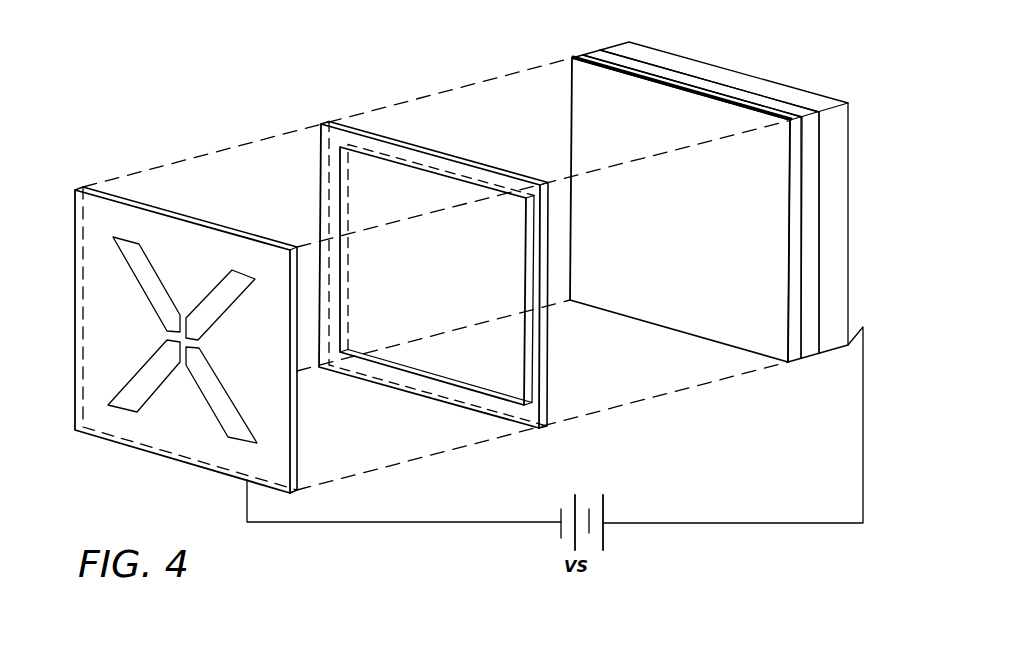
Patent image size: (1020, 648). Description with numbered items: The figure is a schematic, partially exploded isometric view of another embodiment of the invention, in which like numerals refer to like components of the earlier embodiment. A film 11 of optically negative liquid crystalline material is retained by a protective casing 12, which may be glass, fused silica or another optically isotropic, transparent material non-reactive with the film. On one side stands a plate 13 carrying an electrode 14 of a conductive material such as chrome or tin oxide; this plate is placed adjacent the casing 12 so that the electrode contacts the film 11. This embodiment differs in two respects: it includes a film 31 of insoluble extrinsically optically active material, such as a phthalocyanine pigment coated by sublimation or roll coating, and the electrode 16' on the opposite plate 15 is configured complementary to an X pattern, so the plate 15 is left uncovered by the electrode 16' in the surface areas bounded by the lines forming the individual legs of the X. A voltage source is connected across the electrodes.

The plate 15 is at (80, 188).
The electrode 16' is at (234, 344).
The protective casing 12 is at (412, 253).
The film 11 is at (364, 187).
The film 31 is at (577, 56).
The electrode 14 is at (591, 50).
The plate 13 is at (691, 181).